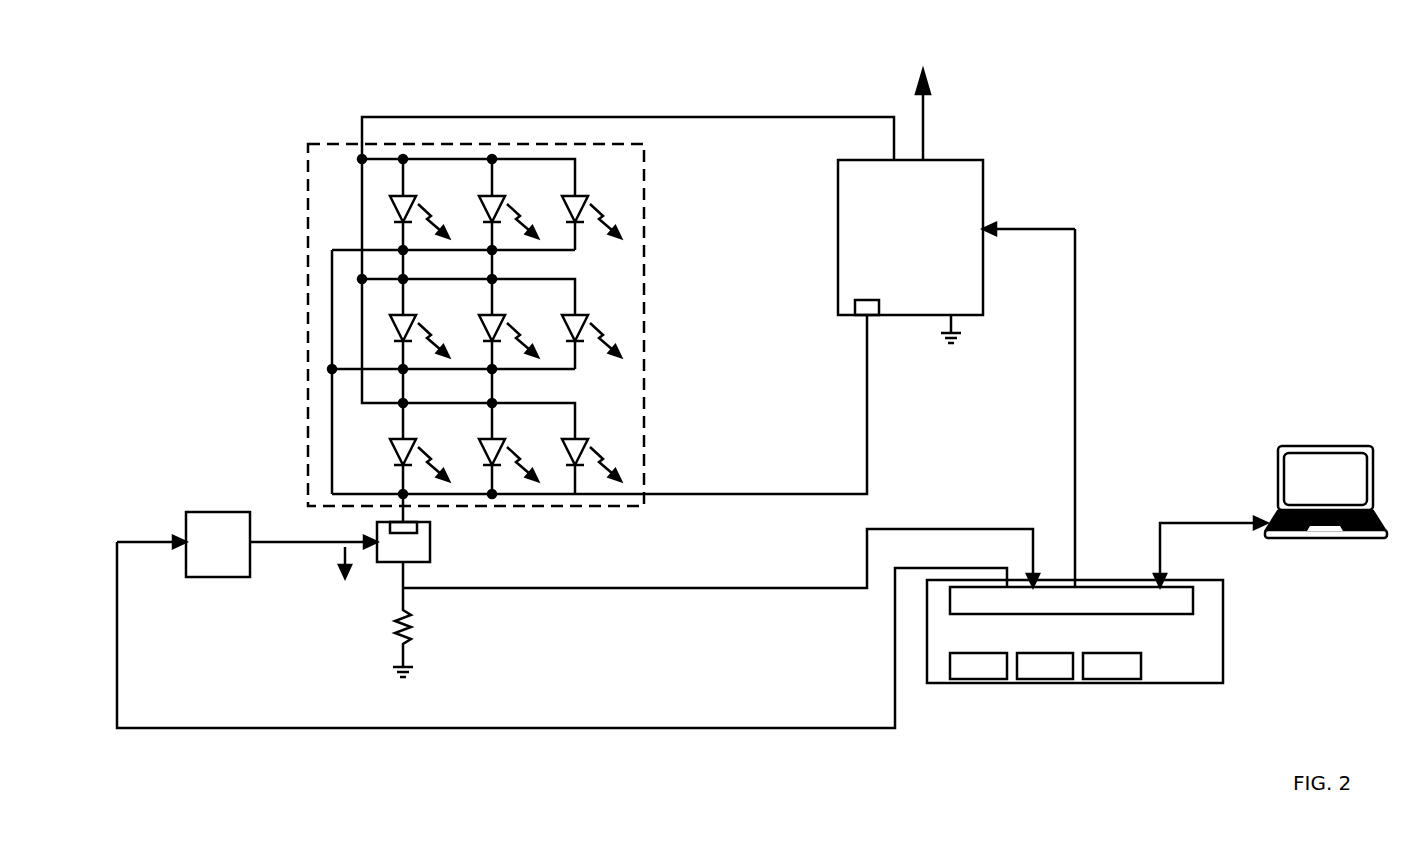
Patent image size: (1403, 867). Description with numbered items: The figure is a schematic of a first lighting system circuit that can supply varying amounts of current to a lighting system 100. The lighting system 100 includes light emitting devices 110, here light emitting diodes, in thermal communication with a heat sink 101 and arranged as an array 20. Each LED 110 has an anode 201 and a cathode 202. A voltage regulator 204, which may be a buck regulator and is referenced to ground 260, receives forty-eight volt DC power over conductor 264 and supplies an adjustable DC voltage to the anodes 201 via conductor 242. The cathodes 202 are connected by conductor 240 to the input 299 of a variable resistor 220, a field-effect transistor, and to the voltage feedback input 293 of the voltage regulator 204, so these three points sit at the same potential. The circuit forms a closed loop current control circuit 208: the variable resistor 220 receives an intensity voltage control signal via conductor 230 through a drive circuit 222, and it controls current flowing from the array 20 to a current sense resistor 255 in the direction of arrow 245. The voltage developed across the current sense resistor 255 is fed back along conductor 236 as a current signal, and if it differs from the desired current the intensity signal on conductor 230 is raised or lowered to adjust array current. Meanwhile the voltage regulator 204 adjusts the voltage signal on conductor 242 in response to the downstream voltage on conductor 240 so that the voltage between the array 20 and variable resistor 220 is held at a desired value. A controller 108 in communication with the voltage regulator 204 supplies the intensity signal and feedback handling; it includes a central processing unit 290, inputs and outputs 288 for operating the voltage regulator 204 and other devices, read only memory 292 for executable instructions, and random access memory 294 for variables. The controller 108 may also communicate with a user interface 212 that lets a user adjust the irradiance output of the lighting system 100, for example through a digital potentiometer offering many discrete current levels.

The lighting system 100 is at (298, 155).
The heat sink 101 is at (645, 376).
The array 20 is at (594, 248).
The light emitting device 110 is at (437, 193).
The anode 201 is at (408, 205).
The cathode 202 is at (401, 223).
The conductor 242 is at (634, 117).
The conductor 240 is at (867, 484).
The voltage regulator 204 is at (956, 373).
The conductor 264 is at (923, 128).
The voltage feedback input 293 is at (866, 308).
The ground 260 is at (960, 338).
The drive circuit 222 is at (222, 512).
The conductor 230 is at (117, 542).
The variable resistor 220 is at (430, 558).
The input 299 is at (392, 525).
The arrow 245 is at (345, 552).
The conductor 236 is at (466, 590).
The current sense resistor 255 is at (410, 630).
The closed loop current control circuit 208 is at (720, 520).
The controller 108 is at (1075, 631).
The inputs and outputs 288 is at (1071, 600).
The central processing unit 290 is at (978, 666).
The read only memory 292 is at (1045, 666).
The random access memory 294 is at (1112, 666).
The user interface 212 is at (1270, 516).